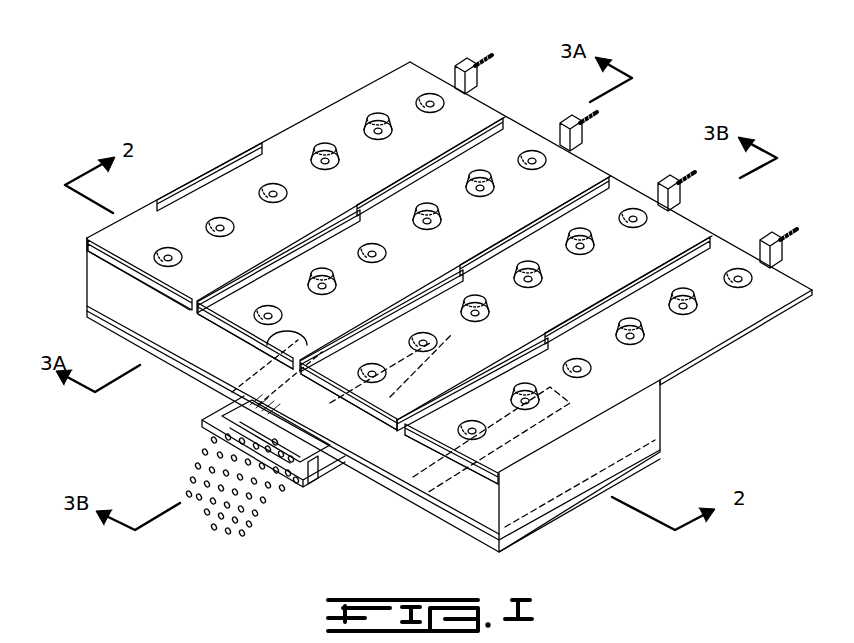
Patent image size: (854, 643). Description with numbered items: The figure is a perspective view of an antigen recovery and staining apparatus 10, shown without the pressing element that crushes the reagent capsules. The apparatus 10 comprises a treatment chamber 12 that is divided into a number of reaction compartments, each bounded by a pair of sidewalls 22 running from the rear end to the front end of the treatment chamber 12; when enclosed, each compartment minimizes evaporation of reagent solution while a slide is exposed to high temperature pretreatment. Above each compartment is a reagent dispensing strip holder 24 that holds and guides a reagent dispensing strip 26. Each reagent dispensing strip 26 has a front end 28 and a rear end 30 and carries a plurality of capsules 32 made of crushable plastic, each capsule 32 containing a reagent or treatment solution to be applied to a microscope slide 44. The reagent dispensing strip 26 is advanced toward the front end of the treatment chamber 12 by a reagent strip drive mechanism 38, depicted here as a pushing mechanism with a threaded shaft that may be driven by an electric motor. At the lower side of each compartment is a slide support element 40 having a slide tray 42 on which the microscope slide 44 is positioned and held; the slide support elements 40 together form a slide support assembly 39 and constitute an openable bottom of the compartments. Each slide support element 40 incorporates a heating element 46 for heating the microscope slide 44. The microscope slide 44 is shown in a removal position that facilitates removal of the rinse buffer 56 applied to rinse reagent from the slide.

The antigen recovery and staining apparatus 10 is at (187, 102).
The treatment chamber 12 is at (86, 278).
The sidewalls 22 is at (541, 497).
The reagent dispensing strip holder 24 is at (270, 250).
The reagent dispensing strip 26 is at (282, 148).
The front end 28 is at (92, 238).
The rear end 30 is at (425, 62).
The capsules 32 is at (425, 94).
The reagent strip drive mechanism 38 is at (490, 70).
The slide support assembly 39 is at (516, 560).
The slide support element 40 is at (140, 340).
The slide tray 42 is at (313, 474).
The microscope slide 44 is at (240, 403).
The heating element 46 is at (303, 488).
The rinse buffer 56 is at (200, 480).